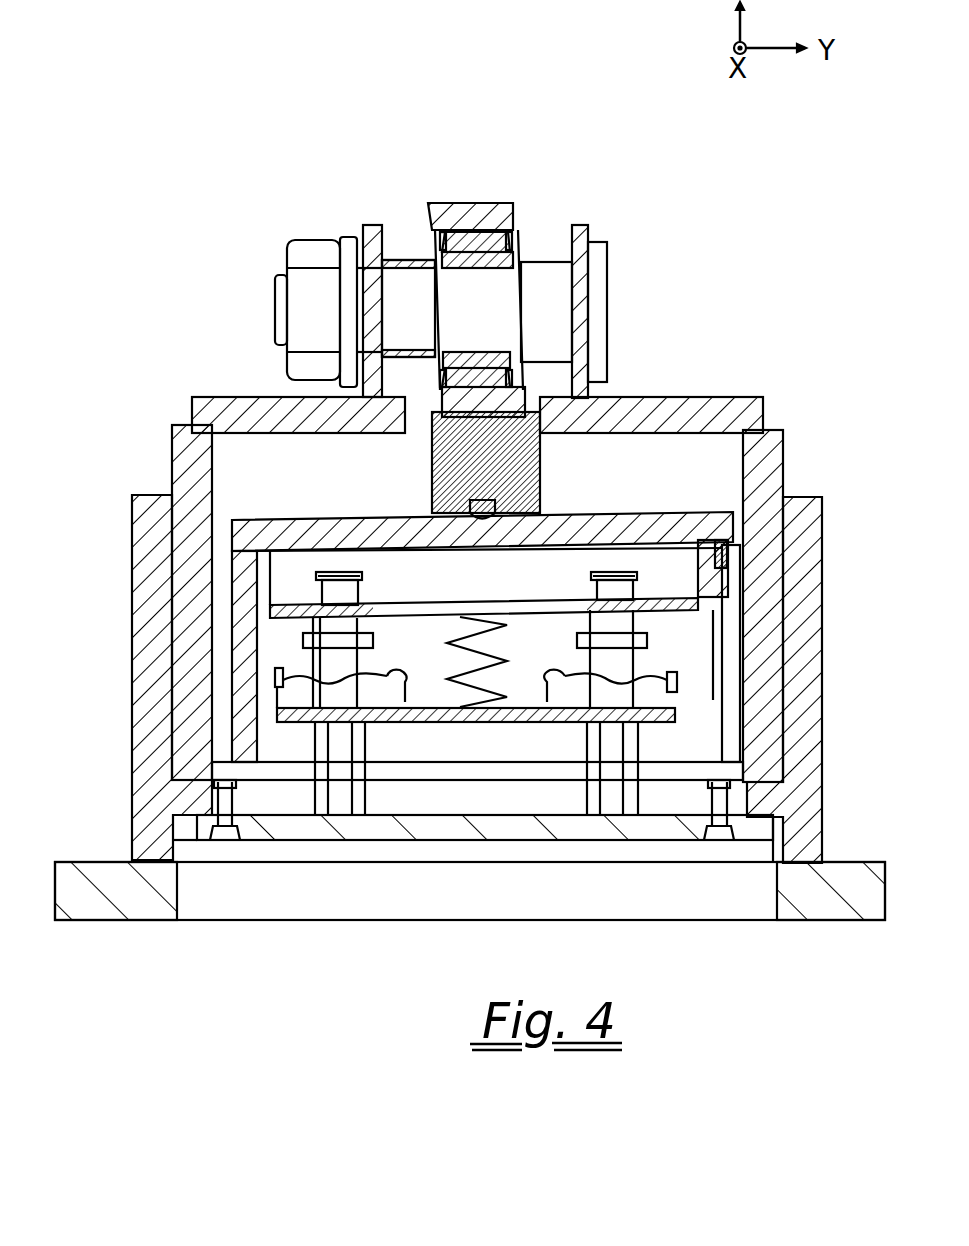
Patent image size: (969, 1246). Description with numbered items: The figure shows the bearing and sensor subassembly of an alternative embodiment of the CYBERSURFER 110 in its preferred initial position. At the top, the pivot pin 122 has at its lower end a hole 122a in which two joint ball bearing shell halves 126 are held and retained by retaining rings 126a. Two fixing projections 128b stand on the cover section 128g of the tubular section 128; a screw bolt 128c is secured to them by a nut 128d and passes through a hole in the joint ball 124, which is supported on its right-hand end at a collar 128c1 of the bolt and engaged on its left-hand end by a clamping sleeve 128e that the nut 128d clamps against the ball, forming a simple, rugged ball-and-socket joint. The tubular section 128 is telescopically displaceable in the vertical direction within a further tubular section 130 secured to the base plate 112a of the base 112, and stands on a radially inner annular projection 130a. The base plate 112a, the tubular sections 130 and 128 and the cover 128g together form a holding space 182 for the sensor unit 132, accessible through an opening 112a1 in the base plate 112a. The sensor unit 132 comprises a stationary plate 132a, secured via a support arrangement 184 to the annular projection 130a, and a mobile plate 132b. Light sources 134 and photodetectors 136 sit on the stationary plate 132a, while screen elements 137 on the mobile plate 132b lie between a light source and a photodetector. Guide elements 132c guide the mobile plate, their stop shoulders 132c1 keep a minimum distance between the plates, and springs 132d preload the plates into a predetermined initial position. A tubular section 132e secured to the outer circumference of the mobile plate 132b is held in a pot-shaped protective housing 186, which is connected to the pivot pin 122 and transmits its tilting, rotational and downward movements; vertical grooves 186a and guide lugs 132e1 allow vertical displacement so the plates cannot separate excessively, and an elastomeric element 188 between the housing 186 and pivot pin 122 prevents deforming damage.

The CYBERSURFER 110 is at (247, 115).
The base 112 is at (470, 976).
The base plate 112a is at (132, 915).
The opening 112a1 is at (247, 907).
The pivot pin 122 is at (558, 269).
The hole 122a is at (512, 240).
The joint ball 124 is at (481, 268).
The joint ball bearing shell halves 126 is at (505, 210).
The retaining rings 126a is at (415, 232).
The tubular section 128 is at (449, 538).
The fixing projections 128b is at (372, 225).
The screw bolt 128c is at (597, 313).
The collar 128c1 is at (548, 290).
The nut 128d is at (310, 255).
The clamping sleeve 128e is at (398, 260).
The cover section 128g is at (240, 410).
The further tubular section 130 is at (145, 556).
The radially inner annular projection 130a is at (745, 805).
The sensor unit 132 is at (492, 772).
The stationary plate 132a is at (515, 715).
The mobile plate 132b is at (667, 597).
The guide elements 132c is at (367, 705).
The stop shoulders 132c1 is at (327, 637).
The springs 132d is at (482, 615).
The tubular section 132e is at (809, 545).
The guide lugs 132e1 is at (728, 542).
The light sources 134 is at (420, 657).
The photodetectors 136 is at (678, 682).
The screen elements 137 is at (303, 640).
The holding space 182 is at (718, 452).
The support arrangement 184 is at (505, 830).
The protective housing 186 is at (566, 613).
The vertical grooves 186a is at (730, 668).
The elastomeric element 188 is at (440, 488).